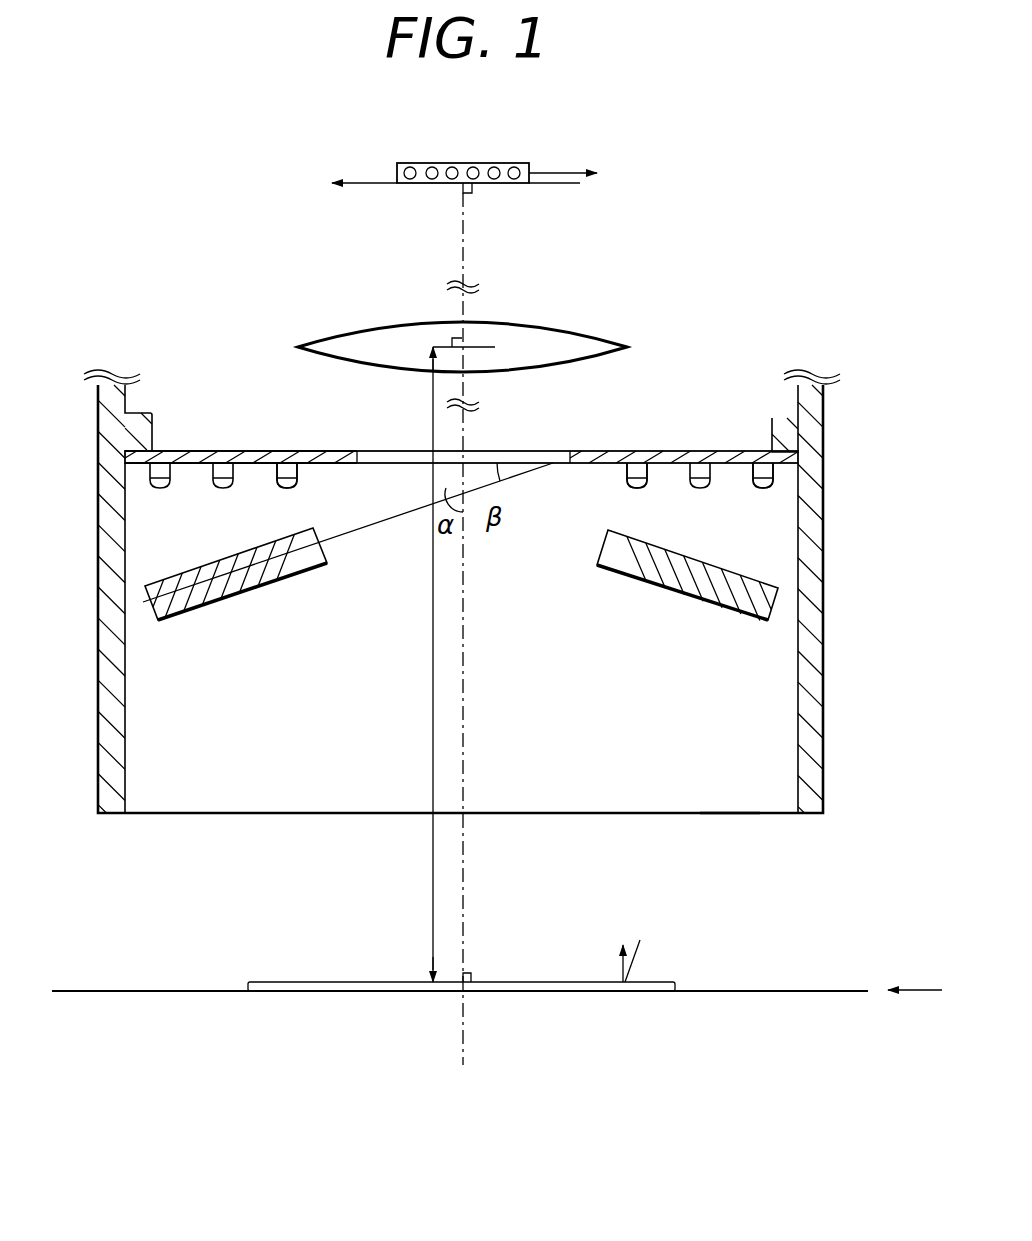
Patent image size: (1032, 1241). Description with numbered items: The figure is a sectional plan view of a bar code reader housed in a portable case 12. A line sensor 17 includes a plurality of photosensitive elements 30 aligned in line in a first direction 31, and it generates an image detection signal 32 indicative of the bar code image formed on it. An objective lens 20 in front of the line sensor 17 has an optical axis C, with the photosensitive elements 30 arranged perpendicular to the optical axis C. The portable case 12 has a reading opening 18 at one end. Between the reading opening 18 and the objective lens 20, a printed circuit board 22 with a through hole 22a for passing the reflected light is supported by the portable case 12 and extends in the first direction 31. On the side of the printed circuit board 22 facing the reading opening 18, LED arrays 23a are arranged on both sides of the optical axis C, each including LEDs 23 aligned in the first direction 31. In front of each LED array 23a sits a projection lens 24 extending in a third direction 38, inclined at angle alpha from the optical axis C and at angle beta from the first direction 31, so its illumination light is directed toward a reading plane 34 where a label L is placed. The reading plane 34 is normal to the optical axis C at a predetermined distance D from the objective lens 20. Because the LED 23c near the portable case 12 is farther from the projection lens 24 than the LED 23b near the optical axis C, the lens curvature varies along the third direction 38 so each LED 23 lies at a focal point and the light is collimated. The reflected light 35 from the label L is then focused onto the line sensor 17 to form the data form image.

The portable case 12 is at (842, 509).
The line sensor 17 is at (505, 163).
The reading opening 18 is at (741, 802).
The objective lens 20 is at (525, 335).
The printed circuit board 22 is at (665, 450).
The through hole 22a is at (386, 451).
The LED 23 is at (222, 490).
The LED array 23a is at (323, 482).
The LED near the optical axis 23b is at (640, 490).
The LED near the portable case 23c is at (763, 490).
The projection lens 24 is at (238, 596).
The photosensitive element 30 is at (410, 165).
The first direction 31 is at (549, 184).
The image detection signal 32 is at (562, 170).
The reading plane 34 is at (797, 992).
The reflected light 35 is at (620, 952).
The third direction 38 is at (344, 547).
The optical axis C is at (463, 673).
The predetermined distance D is at (452, 660).
The label L is at (657, 982).